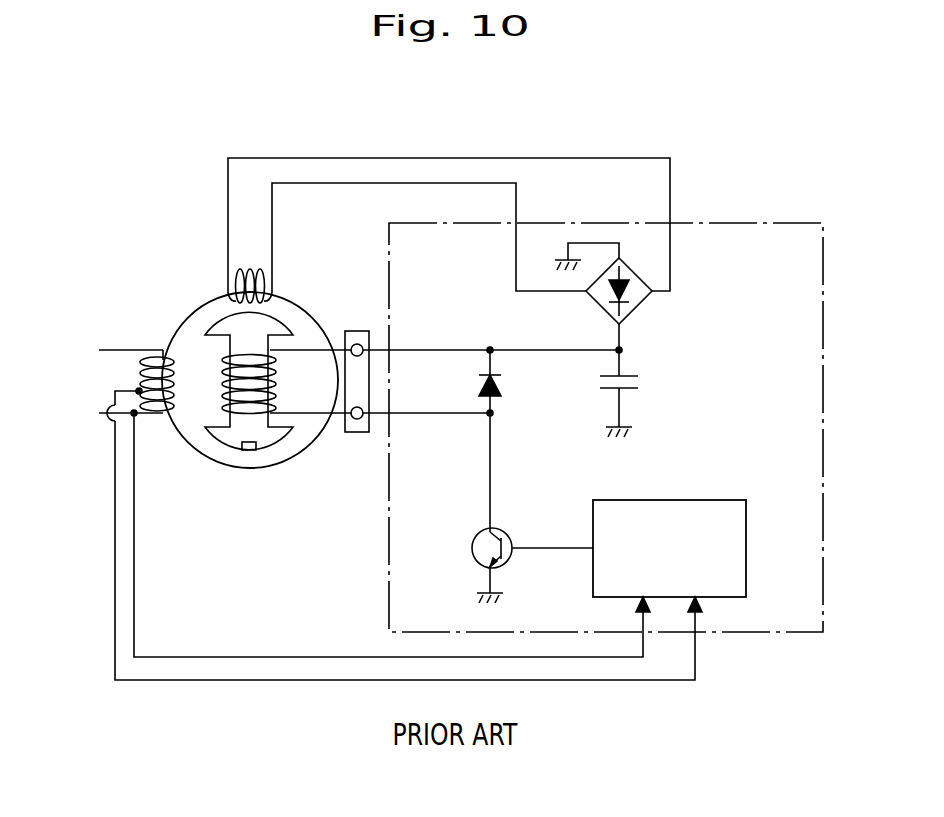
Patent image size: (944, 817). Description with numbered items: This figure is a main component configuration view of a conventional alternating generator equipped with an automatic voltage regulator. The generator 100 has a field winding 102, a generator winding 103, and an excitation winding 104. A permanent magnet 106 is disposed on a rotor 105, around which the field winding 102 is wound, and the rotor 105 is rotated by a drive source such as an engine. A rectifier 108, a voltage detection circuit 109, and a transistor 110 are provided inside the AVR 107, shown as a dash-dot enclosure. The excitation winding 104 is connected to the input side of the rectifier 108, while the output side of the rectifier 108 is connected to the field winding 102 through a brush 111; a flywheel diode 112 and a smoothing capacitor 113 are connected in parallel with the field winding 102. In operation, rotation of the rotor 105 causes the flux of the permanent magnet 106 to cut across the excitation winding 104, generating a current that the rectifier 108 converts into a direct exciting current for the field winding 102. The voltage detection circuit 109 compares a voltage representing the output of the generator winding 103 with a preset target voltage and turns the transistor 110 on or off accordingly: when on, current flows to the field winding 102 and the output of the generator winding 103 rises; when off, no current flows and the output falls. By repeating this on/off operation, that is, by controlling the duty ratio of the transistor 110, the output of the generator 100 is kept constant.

The generator 100 is at (268, 464).
The field winding 102 is at (246, 355).
The generator winding 103 is at (85, 342).
The excitation winding 104 is at (224, 283).
The rotor 105 is at (272, 436).
The permanent magnet 106 is at (245, 451).
The AVR 107 is at (744, 223).
The rectifier 108 is at (641, 305).
The voltage detection circuit 109 is at (700, 500).
The transistor 110 is at (505, 531).
The brush 111 is at (357, 330).
The flywheel diode 112 is at (502, 381).
The smoothing capacitor 113 is at (641, 380).